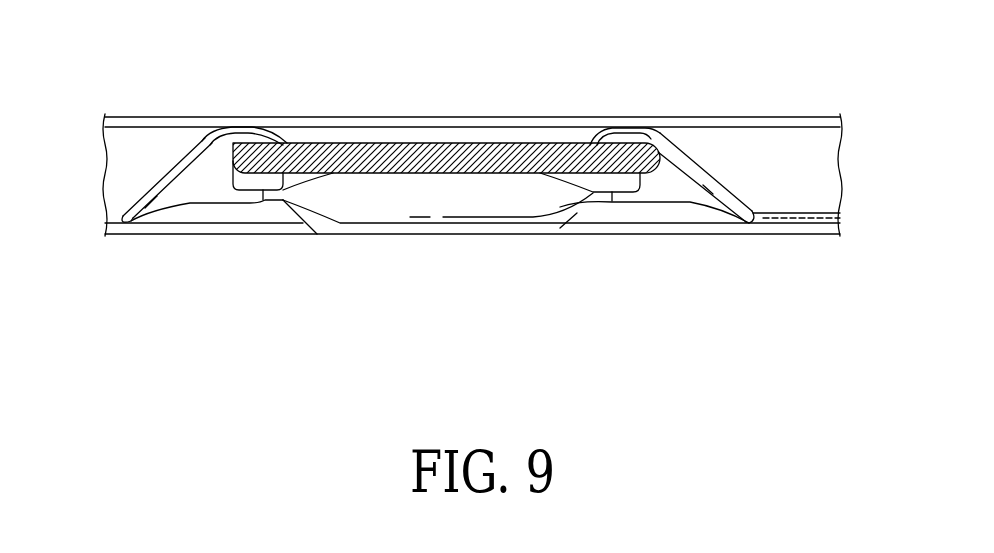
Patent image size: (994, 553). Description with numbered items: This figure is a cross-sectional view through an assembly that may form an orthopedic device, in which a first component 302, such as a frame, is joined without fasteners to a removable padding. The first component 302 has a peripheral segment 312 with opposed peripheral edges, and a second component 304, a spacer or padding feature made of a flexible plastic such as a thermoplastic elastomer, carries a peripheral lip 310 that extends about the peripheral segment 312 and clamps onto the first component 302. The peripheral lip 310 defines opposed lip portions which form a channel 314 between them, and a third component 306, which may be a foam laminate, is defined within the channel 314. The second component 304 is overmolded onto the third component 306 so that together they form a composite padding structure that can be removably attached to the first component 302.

The first component 302 is at (310, 148).
The second component 304 is at (643, 132).
The third component 306 is at (348, 205).
The peripheral lip 310 is at (652, 150).
The peripheral segment 312 is at (243, 135).
The channel 314 is at (263, 177).